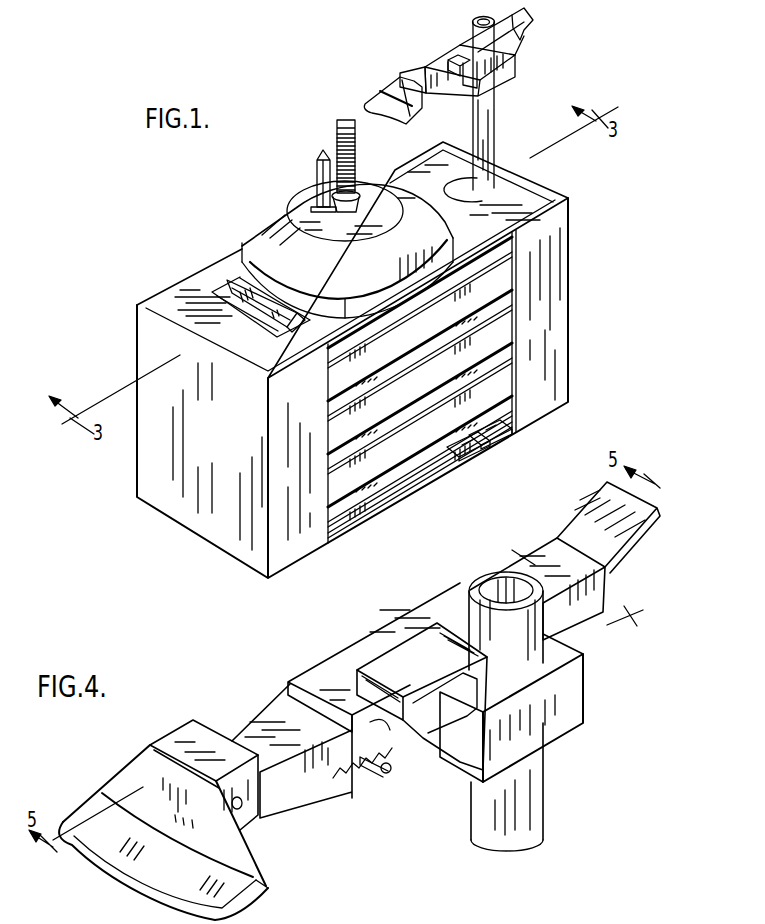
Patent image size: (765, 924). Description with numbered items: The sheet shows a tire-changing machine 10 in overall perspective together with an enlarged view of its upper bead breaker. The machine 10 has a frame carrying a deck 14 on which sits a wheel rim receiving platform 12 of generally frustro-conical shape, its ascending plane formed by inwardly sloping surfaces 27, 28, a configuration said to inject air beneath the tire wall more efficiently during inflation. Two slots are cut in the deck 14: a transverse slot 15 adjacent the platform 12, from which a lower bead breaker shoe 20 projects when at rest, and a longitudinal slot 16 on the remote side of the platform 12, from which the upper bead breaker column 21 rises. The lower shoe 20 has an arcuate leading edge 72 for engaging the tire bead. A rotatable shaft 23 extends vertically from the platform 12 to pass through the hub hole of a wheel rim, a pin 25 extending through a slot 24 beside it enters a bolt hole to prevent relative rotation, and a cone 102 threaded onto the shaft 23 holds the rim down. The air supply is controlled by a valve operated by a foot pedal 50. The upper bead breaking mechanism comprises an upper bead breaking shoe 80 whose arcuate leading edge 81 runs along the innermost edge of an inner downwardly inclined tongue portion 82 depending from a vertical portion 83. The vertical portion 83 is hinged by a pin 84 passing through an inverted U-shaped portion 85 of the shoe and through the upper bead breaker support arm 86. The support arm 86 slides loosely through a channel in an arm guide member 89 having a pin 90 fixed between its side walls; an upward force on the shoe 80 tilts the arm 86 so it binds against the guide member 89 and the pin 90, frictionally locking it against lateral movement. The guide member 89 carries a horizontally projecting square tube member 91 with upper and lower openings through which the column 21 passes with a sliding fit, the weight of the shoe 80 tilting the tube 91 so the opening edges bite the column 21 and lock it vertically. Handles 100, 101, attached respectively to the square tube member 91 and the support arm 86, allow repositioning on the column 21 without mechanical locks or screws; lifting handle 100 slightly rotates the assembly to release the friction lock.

In FIG. 1, the tire-changing machine 10 is at (218, 250).
In FIG. 1, the wheel rim receiving platform 12 is at (270, 228).
In FIG. 1, the deck 14 is at (165, 302).
In FIG. 1, the transverse slot 15 is at (226, 440).
In FIG. 1, the longitudinal slot 16 is at (462, 198).
In FIG. 1, the lower bead breaker shoe 20 is at (268, 312).
In FIG. 1, the upper bead breaker column 21 is at (489, 136).
In FIG. 4, the upper bead breaker column 21 is at (548, 793).
In FIG. 1, the rotatable shaft 23 is at (345, 120).
In FIG. 1, the slot 24 is at (316, 205).
In FIG. 1, the pin 25 is at (321, 162).
In FIG. 1, the inwardly sloping surface 27 is at (315, 268).
In FIG. 1, the inwardly sloping surface 28 is at (429, 229).
In FIG. 1, the foot pedal 50 is at (505, 444).
In FIG. 1, the arcuate leading edge 72 is at (261, 282).
In FIG. 1, the upper bead breaking shoe 80 is at (376, 82).
In FIG. 4, the upper bead breaking shoe 80 is at (173, 786).
In FIG. 4, the leading edge 81 is at (170, 866).
In FIG. 4, the inner downwardly inclined tongue portion 82 is at (244, 890).
In FIG. 4, the vertical portion 83 is at (140, 760).
In FIG. 4, the pin 84 is at (243, 812).
In FIG. 4, the inverted U-shaped portion 85 is at (202, 737).
In FIG. 4, the upper bead breaker support arm 86 is at (285, 790).
In FIG. 4, the arm guide member 89 is at (397, 632).
In FIG. 4, the pin 90 is at (391, 773).
In FIG. 1, the square tube member 91 is at (516, 64).
In FIG. 4, the square tube member 91 is at (585, 684).
In FIG. 1, the handle 100 is at (460, 54).
In FIG. 4, the handle 100 is at (428, 669).
In FIG. 1, the handle 101 is at (532, 24).
In FIG. 4, the handle 101 is at (602, 510).
In FIG. 1, the cone 102 is at (352, 212).